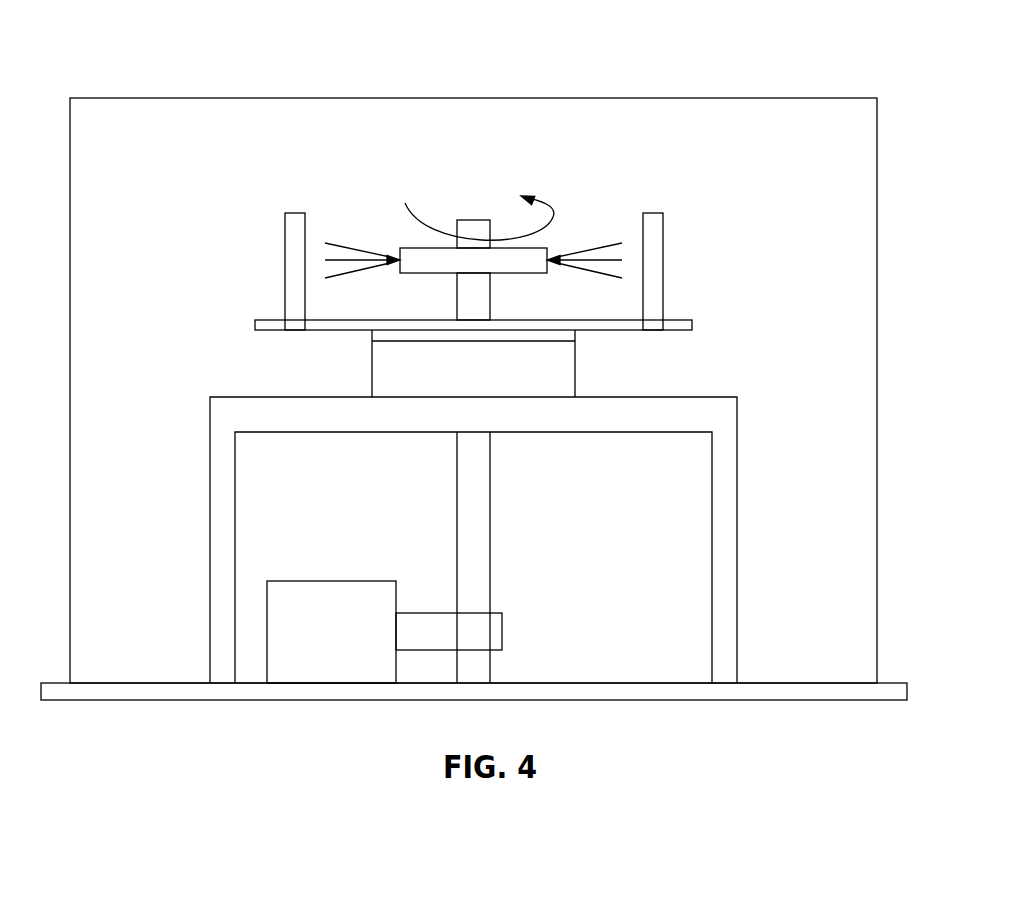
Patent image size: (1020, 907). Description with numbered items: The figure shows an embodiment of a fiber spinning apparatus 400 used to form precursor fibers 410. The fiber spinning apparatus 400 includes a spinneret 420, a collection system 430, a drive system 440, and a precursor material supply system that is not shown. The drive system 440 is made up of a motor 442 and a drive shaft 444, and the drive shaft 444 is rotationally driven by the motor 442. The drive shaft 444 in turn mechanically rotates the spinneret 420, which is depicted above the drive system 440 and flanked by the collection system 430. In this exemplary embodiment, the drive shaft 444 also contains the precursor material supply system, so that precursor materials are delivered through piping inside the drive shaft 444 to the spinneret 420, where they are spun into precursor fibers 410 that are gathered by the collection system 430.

The fiber spinning apparatus 400 is at (766, 95).
The precursor fibers 410 is at (577, 268).
The spinneret 420 is at (552, 246).
The collection system 430 is at (666, 241).
The drive system 440 is at (380, 596).
The motor 442 is at (305, 580).
The drive shaft 444 is at (496, 539).